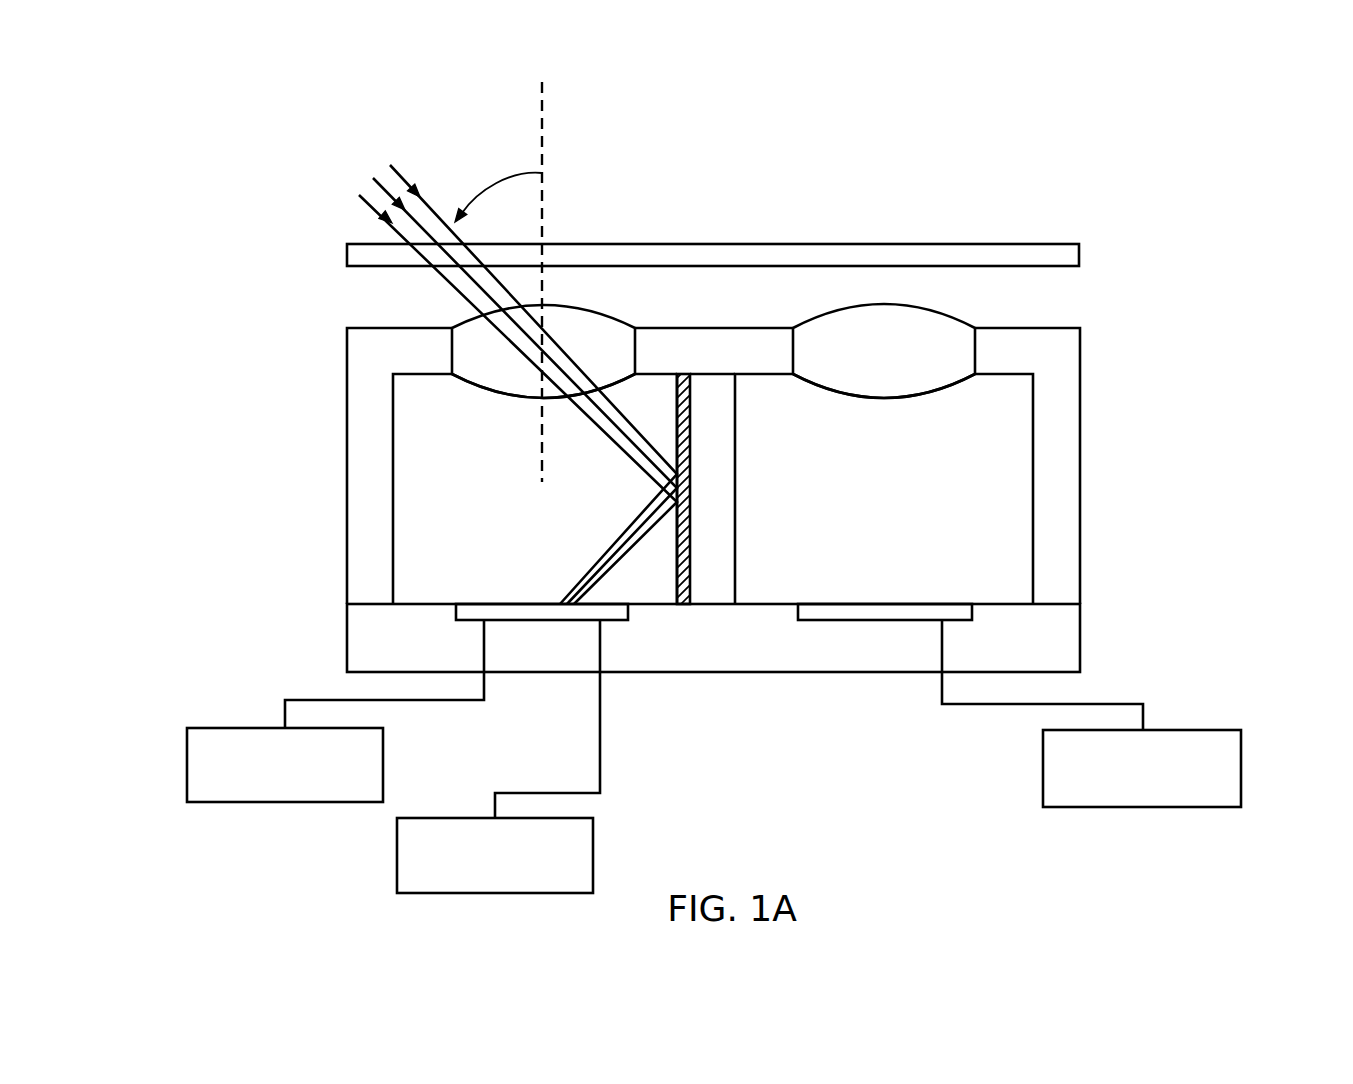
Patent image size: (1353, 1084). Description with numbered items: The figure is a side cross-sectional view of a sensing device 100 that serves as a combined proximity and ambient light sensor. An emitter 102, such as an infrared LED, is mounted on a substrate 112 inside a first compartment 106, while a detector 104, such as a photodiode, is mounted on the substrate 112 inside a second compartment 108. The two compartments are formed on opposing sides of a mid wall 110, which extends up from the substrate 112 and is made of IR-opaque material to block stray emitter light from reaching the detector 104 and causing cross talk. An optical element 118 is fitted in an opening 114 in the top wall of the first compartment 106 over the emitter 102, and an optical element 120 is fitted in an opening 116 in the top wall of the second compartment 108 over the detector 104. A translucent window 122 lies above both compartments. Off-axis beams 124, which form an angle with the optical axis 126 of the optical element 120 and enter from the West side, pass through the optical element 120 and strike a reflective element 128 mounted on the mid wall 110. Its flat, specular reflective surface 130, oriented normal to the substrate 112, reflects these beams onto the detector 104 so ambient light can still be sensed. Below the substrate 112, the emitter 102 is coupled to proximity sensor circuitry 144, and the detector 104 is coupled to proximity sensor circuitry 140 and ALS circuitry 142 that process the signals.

The sensing device 100 is at (942, 109).
The emitter 102 is at (878, 620).
The detector 104 is at (556, 615).
The first compartment 106 is at (1083, 512).
The second compartment 108 is at (336, 510).
The mid wall 110 is at (737, 425).
The substrate 112 is at (1081, 638).
The opening 114 is at (960, 392).
The opening 116 is at (477, 396).
The optical element 118 is at (958, 313).
The optical element 120 is at (456, 317).
The window 122 is at (993, 244).
The off-axis beams 124 is at (357, 207).
The optical axis 126 is at (543, 103).
The reflective element 128 is at (690, 517).
The reflective surface 130 is at (677, 567).
The proximity sensor circuitry 140 is at (187, 762).
The ALS circuitry 142 is at (397, 857).
The proximity sensor circuitry 144 is at (1241, 765).